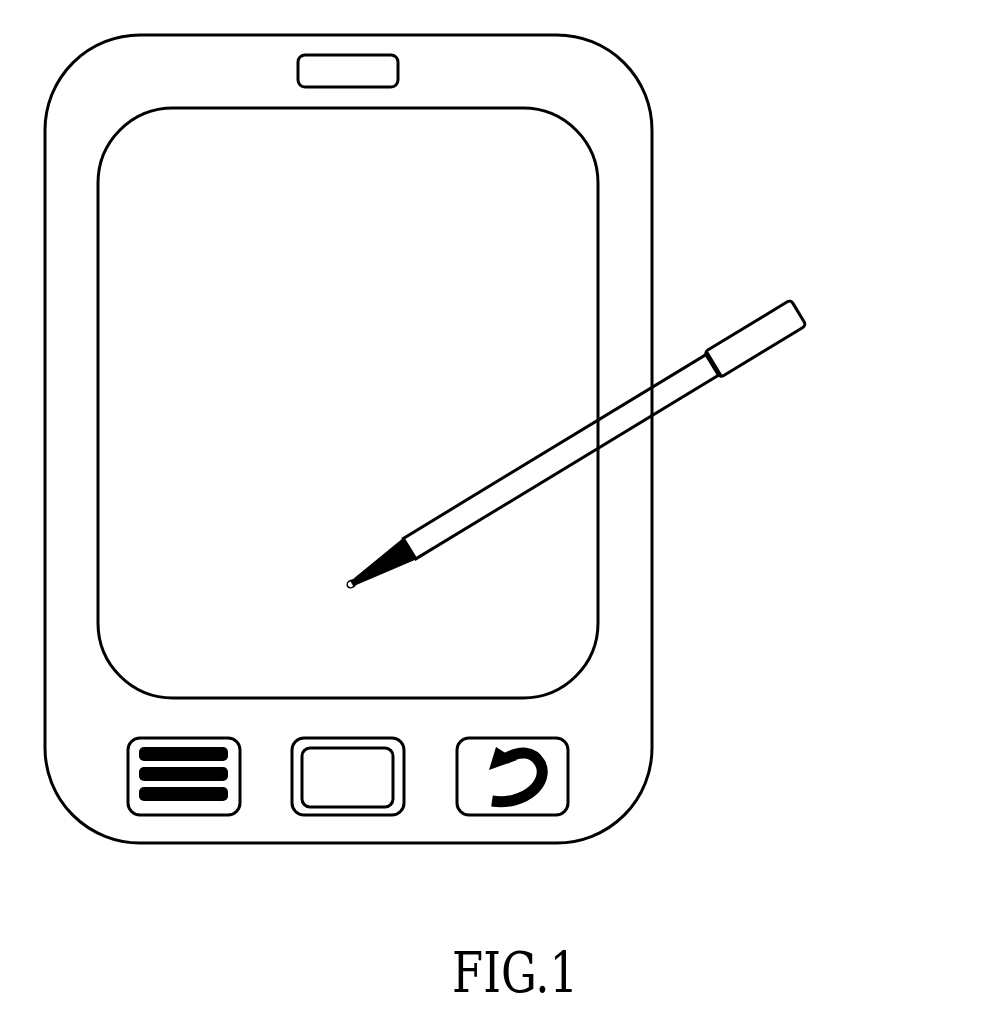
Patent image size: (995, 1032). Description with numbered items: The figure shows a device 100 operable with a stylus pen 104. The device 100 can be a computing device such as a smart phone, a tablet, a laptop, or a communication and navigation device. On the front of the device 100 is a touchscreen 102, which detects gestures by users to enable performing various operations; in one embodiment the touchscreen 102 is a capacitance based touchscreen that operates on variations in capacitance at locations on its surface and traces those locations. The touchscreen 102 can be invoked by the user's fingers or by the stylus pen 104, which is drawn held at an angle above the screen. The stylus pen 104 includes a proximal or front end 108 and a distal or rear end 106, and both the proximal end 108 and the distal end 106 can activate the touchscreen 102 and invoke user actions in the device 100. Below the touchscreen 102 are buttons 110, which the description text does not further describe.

The device 100 is at (692, 106).
The touchscreen 102 is at (372, 356).
The stylus pen 104 is at (628, 420).
The distal end 106 is at (743, 367).
The proximal end 108 is at (370, 560).
The buttons 110 is at (190, 737).